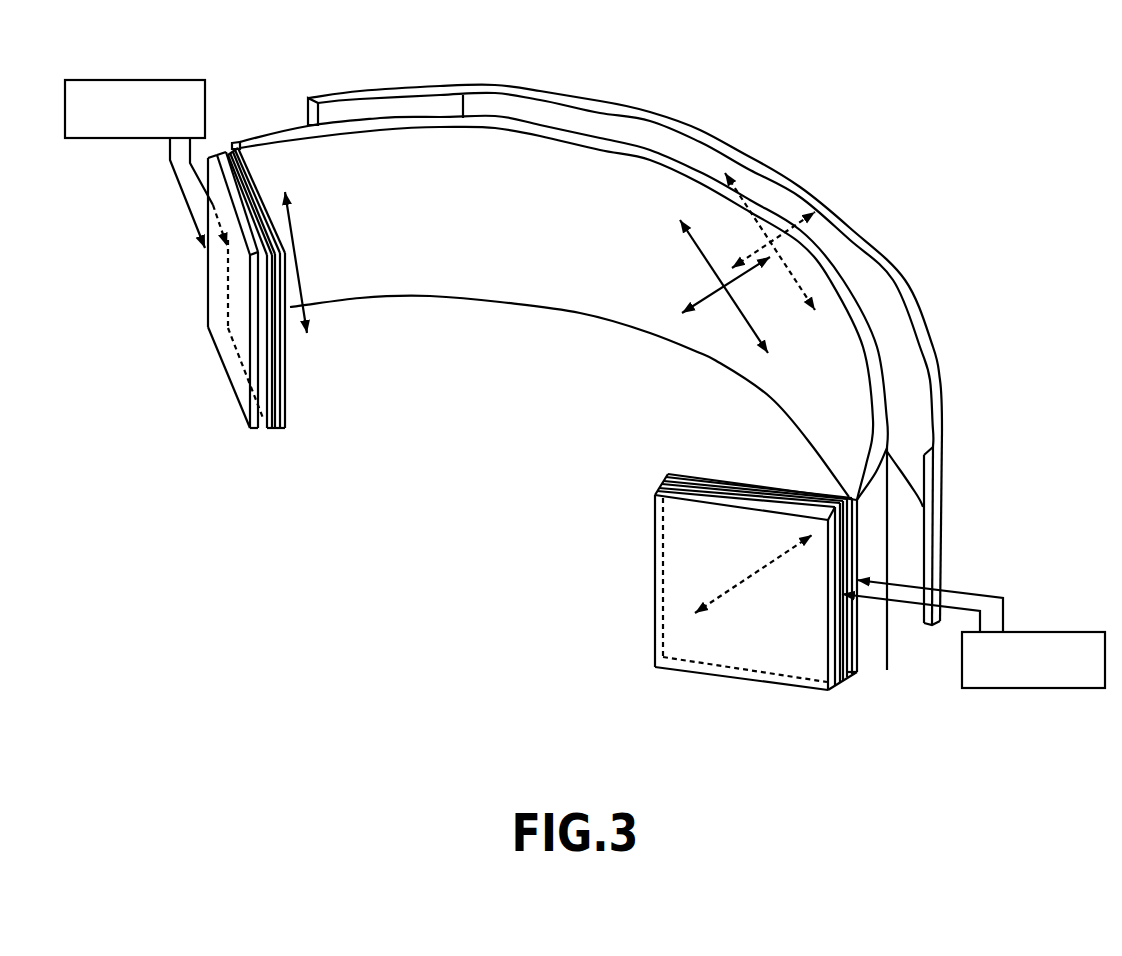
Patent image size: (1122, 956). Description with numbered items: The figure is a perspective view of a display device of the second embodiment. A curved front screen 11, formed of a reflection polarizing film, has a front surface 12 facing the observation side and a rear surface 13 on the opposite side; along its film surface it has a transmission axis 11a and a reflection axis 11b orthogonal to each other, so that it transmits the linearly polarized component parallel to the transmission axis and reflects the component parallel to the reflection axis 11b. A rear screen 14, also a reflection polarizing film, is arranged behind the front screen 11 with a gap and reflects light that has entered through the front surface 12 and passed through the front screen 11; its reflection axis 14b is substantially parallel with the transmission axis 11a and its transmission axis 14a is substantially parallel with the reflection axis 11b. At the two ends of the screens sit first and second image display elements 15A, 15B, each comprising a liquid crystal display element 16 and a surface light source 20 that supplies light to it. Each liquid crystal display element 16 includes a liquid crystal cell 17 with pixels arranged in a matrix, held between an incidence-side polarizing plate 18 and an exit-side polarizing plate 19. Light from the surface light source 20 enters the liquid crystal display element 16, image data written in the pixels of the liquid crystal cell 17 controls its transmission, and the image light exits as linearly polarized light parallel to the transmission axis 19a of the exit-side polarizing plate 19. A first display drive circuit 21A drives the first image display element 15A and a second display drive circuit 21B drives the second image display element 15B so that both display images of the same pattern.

The front screen 11 is at (540, 124).
The transmission axis 11a is at (712, 302).
The reflection axis 11b is at (745, 320).
The front surface 12 is at (522, 296).
The rear surface 13 is at (463, 117).
The rear screen 14 is at (637, 109).
The transmission axis 14a is at (797, 272).
The reflection axis 14b is at (771, 215).
The first image display element 15A is at (226, 384).
The second image display element 15B is at (652, 650).
The liquid crystal display element 16 is at (264, 176).
The liquid crystal cell 17 is at (280, 370).
The incidence-side polarizing plate 18 is at (273, 383).
The exit-side polarizing plate 19 is at (287, 354).
The transmission axis 19a is at (293, 247).
The surface light source 20 is at (217, 299).
The first display drive circuit 21A is at (135, 80).
The second display drive circuit 21B is at (1027, 632).